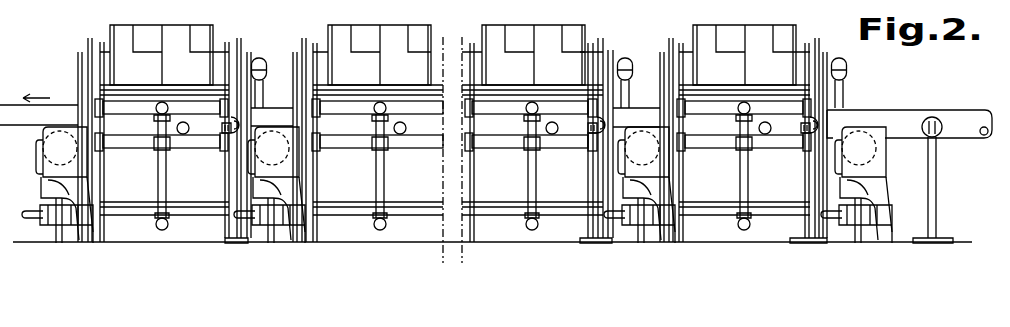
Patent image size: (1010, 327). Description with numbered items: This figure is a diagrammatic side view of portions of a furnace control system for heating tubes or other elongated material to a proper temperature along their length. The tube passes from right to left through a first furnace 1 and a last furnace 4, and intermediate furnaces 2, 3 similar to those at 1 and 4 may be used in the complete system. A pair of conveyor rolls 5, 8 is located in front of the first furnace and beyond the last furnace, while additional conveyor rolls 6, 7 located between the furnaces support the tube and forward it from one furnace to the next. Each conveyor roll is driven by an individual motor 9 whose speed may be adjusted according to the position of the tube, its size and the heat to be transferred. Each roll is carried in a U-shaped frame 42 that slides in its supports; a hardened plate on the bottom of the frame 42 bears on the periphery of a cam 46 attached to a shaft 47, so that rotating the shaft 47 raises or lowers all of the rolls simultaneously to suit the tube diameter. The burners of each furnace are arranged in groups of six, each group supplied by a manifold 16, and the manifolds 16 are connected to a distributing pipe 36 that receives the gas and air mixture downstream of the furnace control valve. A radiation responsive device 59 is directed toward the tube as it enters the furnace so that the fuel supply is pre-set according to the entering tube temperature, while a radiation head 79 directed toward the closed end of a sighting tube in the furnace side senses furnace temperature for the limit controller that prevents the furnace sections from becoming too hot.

The first furnace 1 is at (710, 48).
The intermediate furnace 2 is at (497, 50).
The intermediate furnace 3 is at (340, 50).
The last furnace 4 is at (199, 47).
The conveyor roll 5 is at (857, 136).
The conveyor roll 6 is at (639, 133).
The conveyor roll 7 is at (268, 136).
The conveyor roll 8 is at (54, 128).
The individual motor 9 is at (48, 167).
The manifold 16 is at (137, 112).
The distributing pipe 36 is at (162, 231).
The U-shaped frame 42 is at (48, 191).
The cam 46 is at (59, 226).
The shaft 47 is at (40, 214).
The radiation responsive device 59 is at (259, 58).
The radiation head 79 is at (184, 134).